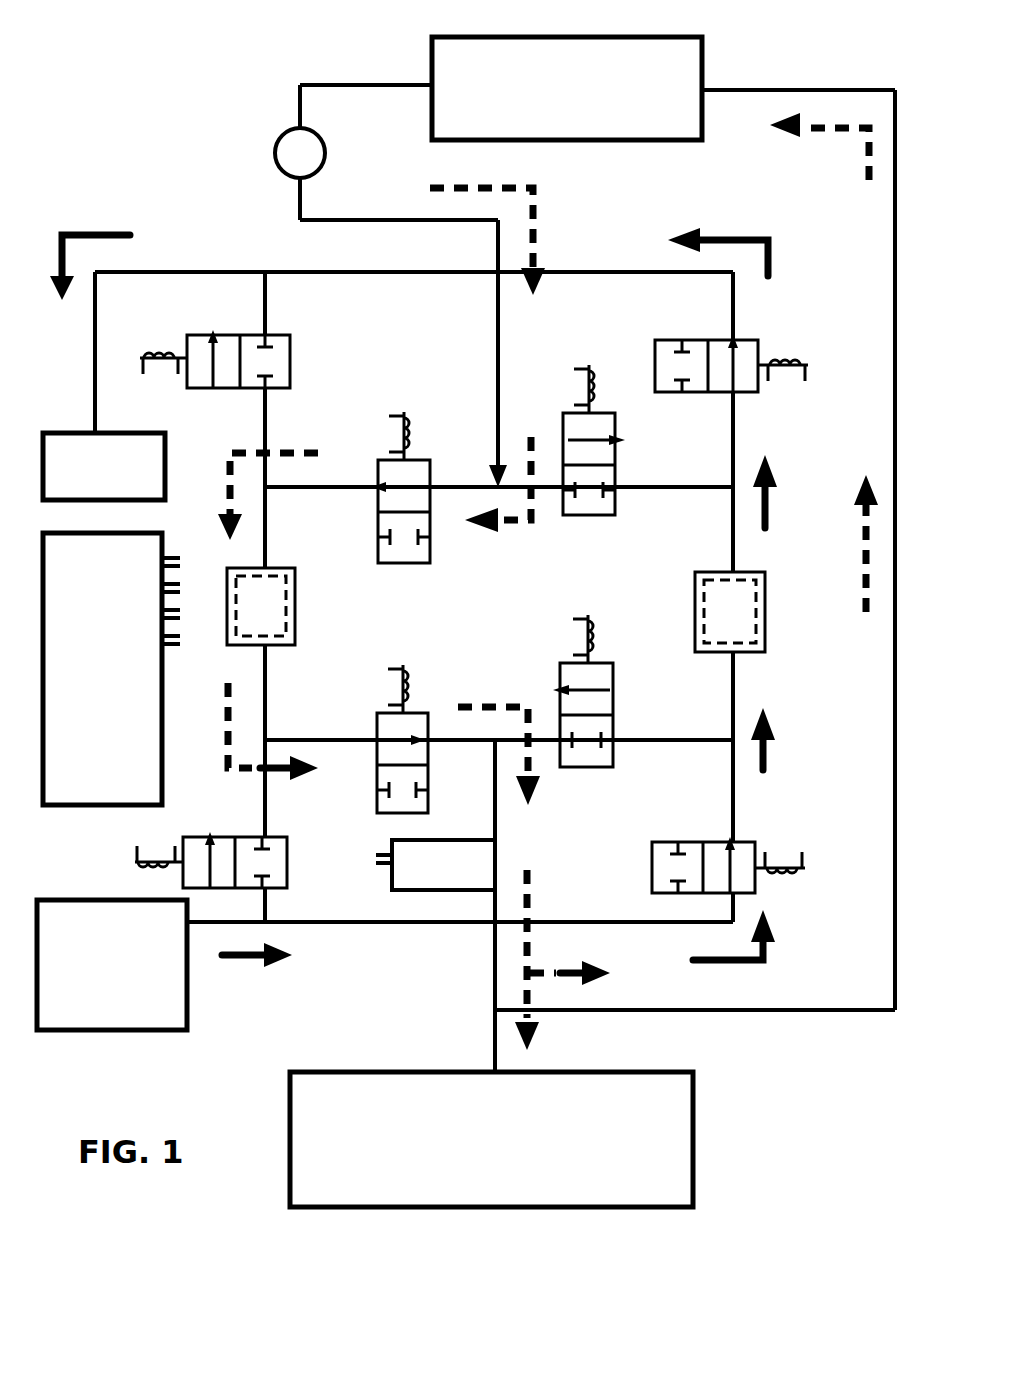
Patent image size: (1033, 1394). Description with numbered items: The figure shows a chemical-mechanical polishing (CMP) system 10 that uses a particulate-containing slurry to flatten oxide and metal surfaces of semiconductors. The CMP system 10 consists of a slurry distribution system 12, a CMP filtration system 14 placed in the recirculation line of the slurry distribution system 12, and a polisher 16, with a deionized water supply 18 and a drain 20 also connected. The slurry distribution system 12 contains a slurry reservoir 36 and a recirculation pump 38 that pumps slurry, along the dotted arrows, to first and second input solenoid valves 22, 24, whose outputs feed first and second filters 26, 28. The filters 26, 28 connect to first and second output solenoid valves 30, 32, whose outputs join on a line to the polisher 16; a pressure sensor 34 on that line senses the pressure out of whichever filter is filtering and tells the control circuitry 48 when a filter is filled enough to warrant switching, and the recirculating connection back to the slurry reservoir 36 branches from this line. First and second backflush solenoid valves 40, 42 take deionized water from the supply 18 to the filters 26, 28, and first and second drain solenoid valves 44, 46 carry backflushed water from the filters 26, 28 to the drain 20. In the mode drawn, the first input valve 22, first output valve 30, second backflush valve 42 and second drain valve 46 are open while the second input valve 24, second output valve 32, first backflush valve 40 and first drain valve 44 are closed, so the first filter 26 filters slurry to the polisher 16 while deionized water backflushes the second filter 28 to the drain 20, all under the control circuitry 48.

The chemical-mechanical polishing (CMP) system 10 is at (155, 70).
The slurry distribution system 12 is at (210, 123).
The CMP filtration system 14 is at (167, 178).
The polisher 16 is at (491, 1139).
The deionized water supply 18 is at (112, 965).
The drain 20 is at (104, 466).
The first input solenoid valve 22 is at (432, 458).
The second input solenoid valve 24 is at (561, 414).
The first filter 26 is at (313, 588).
The second filter 28 is at (693, 598).
The first output solenoid valve 30 is at (375, 714).
The second output solenoid valve 32 is at (615, 700).
The pressure sensor 34 is at (392, 840).
The slurry reservoir 36 is at (567, 88).
The recirculation pump 38 is at (326, 145).
The first backflush solenoid valve 40 is at (272, 836).
The second backflush solenoid valve 42 is at (670, 841).
The first drain solenoid valve 44 is at (276, 334).
The second drain solenoid valve 46 is at (674, 340).
The control circuitry 48 is at (111, 669).